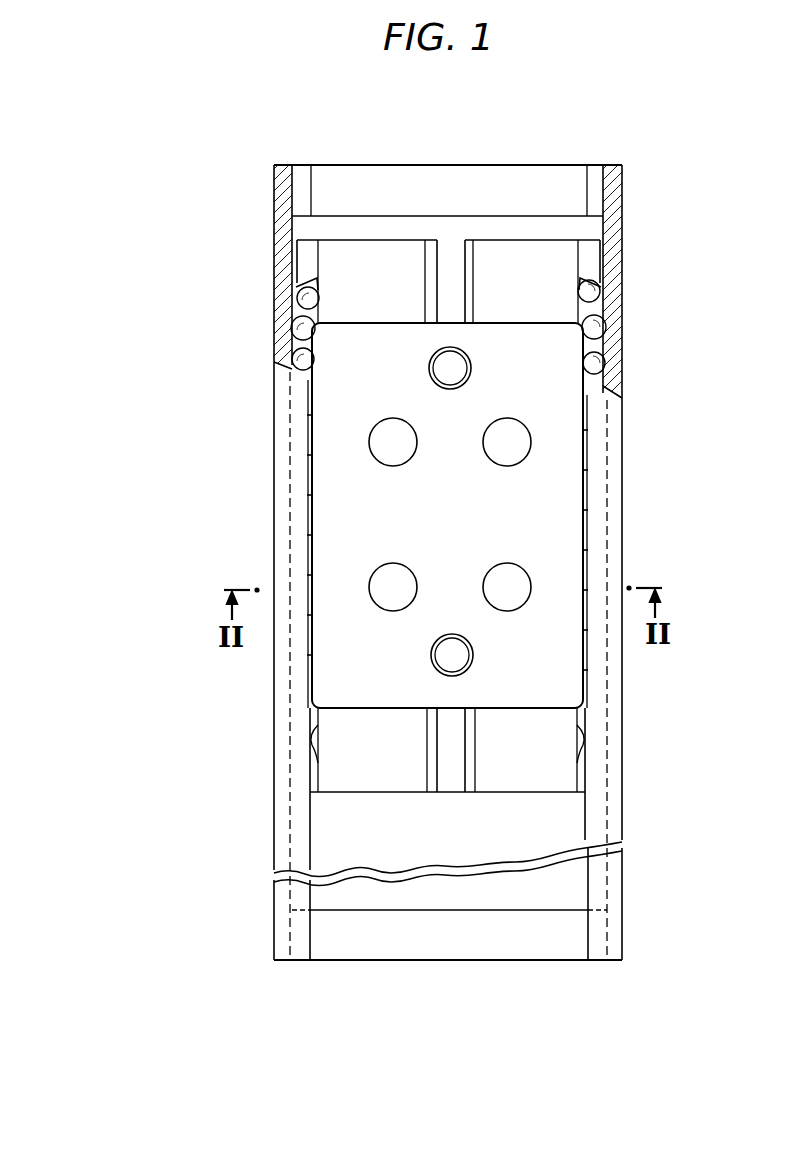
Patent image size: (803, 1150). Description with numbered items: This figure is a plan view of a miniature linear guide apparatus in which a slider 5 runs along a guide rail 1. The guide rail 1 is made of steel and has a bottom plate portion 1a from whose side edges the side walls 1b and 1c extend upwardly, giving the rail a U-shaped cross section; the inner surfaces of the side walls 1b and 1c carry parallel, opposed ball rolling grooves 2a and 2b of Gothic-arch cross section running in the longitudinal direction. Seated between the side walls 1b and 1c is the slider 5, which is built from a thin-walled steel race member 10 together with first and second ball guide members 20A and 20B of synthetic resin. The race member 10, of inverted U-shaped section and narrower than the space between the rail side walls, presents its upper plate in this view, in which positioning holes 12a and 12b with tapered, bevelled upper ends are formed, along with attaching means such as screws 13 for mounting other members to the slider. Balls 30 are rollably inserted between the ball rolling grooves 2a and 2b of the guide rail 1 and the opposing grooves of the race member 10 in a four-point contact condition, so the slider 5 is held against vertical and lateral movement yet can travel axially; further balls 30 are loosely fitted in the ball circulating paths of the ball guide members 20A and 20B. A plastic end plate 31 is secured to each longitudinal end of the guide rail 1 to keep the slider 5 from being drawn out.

The guide rail 1 is at (623, 184).
The bottom plate portion 1a is at (394, 226).
The side wall 1b is at (275, 460).
The side wall 1c is at (613, 478).
The ball rolling groove 2a is at (290, 354).
The ball rolling groove 2b is at (606, 342).
The slider 5 is at (553, 378).
The race member 10 is at (567, 528).
The positioning hole 12a is at (382, 424).
The positioning hole 12b is at (512, 420).
The screw 13 is at (462, 362).
The first ball guide member 20A is at (398, 778).
The second ball guide member 20B is at (560, 772).
The balls 30 is at (585, 725).
The end plate 31 is at (503, 183).